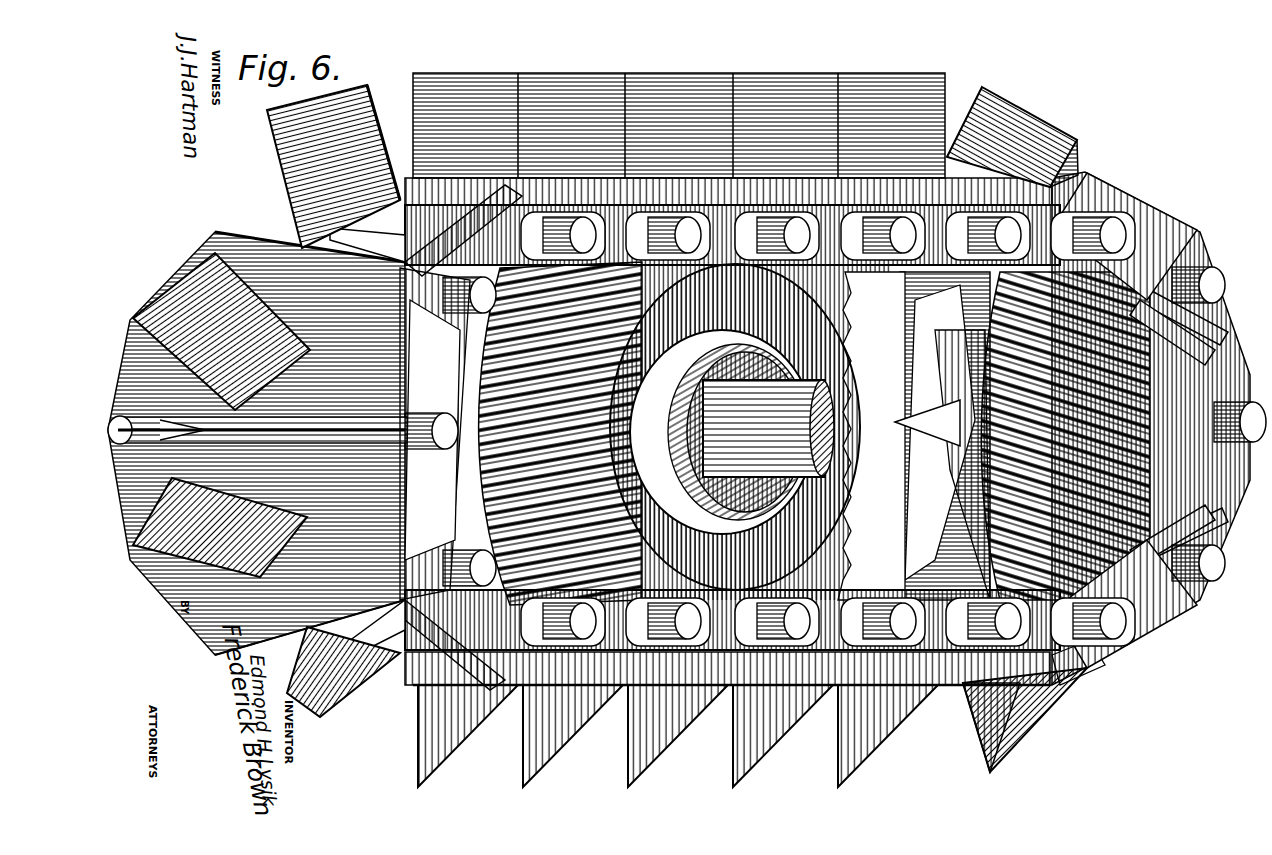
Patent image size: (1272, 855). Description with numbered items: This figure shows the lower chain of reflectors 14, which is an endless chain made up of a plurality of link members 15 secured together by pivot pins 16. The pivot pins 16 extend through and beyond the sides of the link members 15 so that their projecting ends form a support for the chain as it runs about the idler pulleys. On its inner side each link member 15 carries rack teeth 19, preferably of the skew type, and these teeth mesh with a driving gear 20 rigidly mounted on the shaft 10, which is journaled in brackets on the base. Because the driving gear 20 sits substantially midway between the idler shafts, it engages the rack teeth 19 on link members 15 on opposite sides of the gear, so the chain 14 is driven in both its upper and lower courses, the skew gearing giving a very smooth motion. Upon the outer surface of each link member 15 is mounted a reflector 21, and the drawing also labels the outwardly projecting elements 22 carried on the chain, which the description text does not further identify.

The shaft 10 is at (768, 428).
The lower chain of reflectors 14 is at (150, 492).
The link members 15 is at (295, 210).
The pivot pins 16 is at (880, 232).
The rack teeth 19 is at (1180, 332).
The driving gear 20 is at (505, 492).
The reflector 21 is at (330, 242).
The cleats / paddles 22 is at (318, 155).